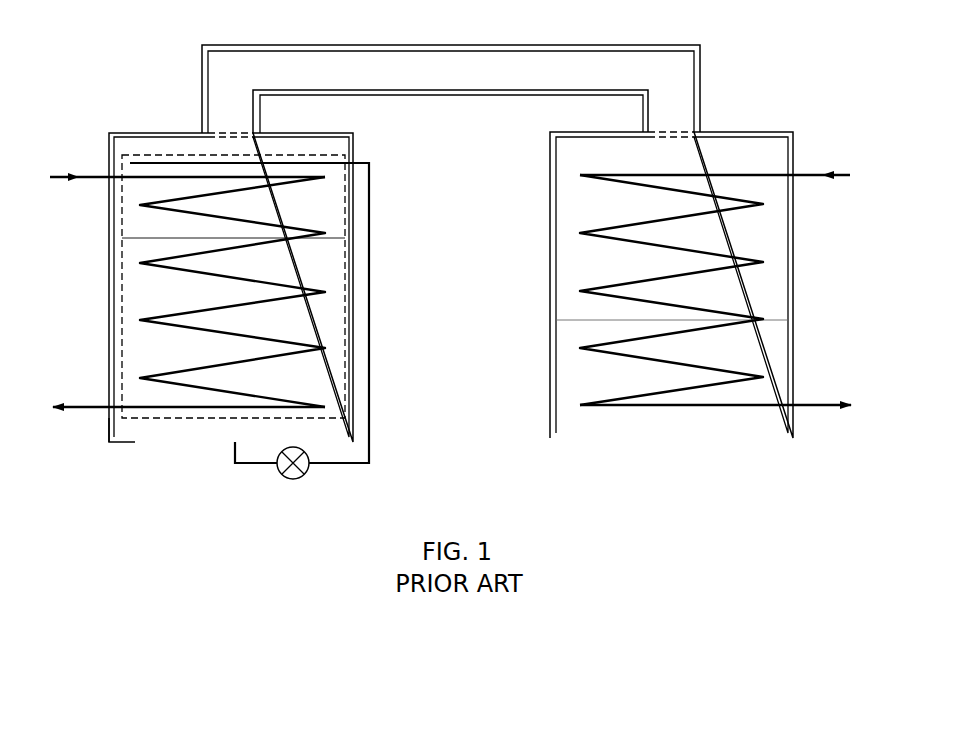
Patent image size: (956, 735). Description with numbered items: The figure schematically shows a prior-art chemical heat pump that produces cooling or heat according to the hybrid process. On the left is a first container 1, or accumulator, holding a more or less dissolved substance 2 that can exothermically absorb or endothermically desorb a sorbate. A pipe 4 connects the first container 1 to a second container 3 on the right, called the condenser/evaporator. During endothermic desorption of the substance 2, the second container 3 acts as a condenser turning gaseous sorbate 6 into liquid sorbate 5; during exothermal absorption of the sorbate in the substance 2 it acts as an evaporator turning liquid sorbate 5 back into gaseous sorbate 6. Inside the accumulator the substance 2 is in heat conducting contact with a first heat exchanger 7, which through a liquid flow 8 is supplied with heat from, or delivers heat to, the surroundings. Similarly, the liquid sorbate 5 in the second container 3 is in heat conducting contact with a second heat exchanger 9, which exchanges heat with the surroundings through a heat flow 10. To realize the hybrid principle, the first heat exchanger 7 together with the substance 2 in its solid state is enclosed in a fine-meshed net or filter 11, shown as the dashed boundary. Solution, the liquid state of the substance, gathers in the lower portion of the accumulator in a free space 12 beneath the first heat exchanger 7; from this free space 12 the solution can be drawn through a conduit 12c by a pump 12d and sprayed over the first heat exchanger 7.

The first container 1 is at (117, 310).
The substance 2 is at (313, 332).
The second container 3 is at (795, 283).
The pipe 4 is at (434, 46).
The liquid sorbate 5 is at (532, 380).
The gaseous sorbate 6 is at (567, 160).
The first heat exchanger 7 is at (297, 298).
The liquid flow 8 is at (97, 181).
The second heat exchanger 9 is at (608, 285).
The heat flow 10 is at (805, 180).
The fine-meshed net or filter 11 is at (120, 257).
The free space 12 is at (128, 427).
The conduit 12c is at (370, 390).
The pump 12d is at (296, 478).